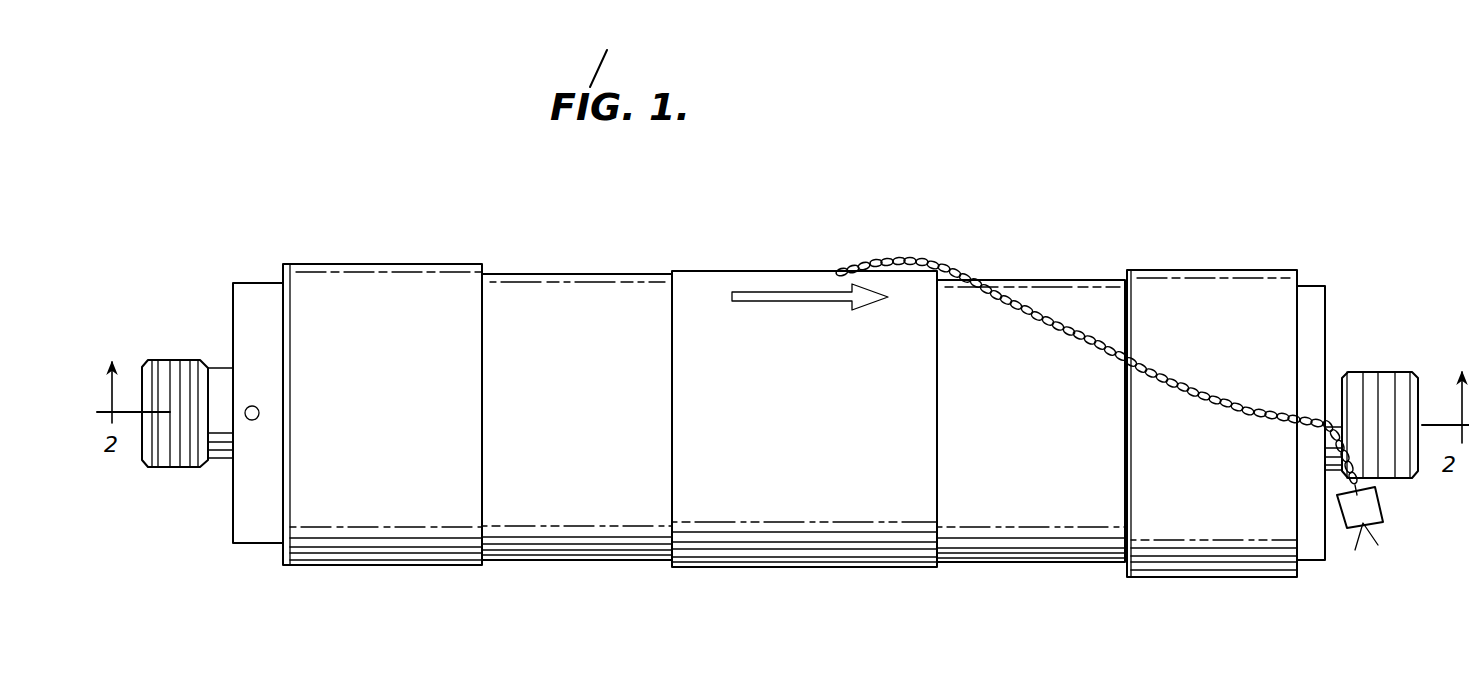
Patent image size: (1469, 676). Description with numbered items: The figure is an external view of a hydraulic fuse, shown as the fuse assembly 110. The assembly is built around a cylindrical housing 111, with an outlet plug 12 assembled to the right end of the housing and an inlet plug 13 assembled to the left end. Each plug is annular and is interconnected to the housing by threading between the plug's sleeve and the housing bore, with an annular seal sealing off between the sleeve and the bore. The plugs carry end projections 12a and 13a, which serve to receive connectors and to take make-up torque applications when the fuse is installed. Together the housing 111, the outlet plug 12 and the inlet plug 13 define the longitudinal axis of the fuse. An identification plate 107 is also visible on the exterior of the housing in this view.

The outlet plug 12 is at (1332, 302).
The end projection 12a is at (1405, 480).
The inlet plug 13 is at (226, 299).
The end projection 13a is at (170, 468).
The identification plate 107 is at (785, 507).
The fuse assembly 110 is at (1072, 226).
The cylindrical housing 111 is at (568, 547).